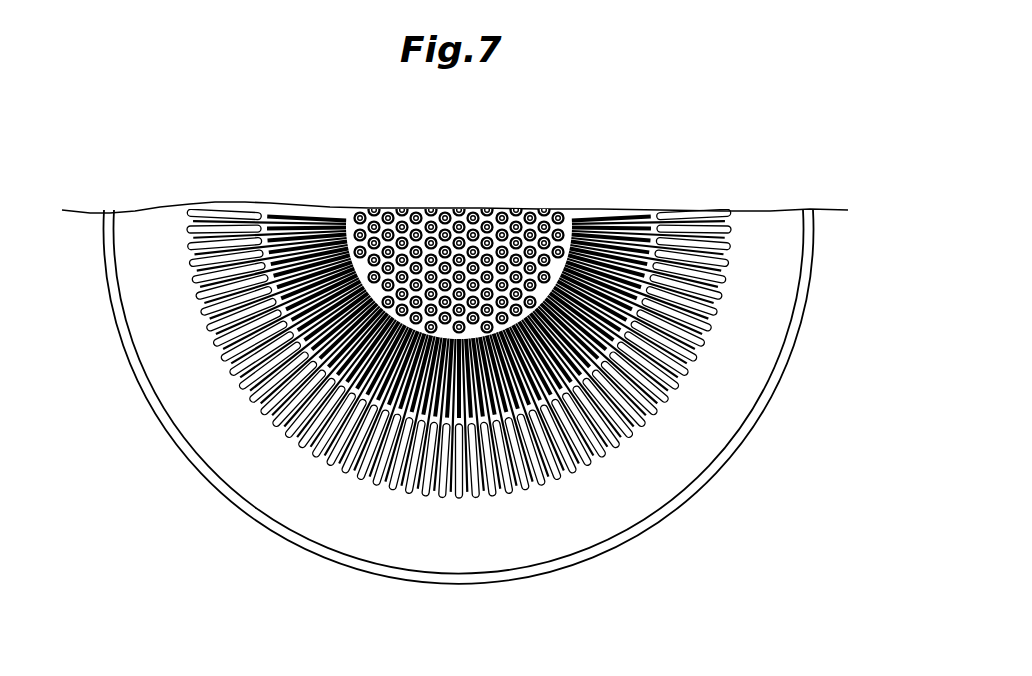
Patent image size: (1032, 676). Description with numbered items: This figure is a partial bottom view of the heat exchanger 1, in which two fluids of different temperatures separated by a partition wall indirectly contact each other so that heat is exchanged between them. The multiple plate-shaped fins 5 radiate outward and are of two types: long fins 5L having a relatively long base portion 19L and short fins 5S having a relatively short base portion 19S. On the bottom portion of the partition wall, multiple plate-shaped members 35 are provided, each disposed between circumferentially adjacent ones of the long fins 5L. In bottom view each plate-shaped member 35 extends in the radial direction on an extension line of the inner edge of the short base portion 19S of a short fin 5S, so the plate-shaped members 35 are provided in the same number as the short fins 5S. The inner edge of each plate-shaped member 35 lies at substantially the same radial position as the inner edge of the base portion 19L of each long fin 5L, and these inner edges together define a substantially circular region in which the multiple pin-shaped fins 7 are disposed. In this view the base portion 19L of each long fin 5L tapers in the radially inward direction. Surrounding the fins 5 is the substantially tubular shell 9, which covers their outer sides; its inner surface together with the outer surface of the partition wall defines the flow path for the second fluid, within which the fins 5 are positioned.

The heat exchanger 1 is at (233, 560).
The plate-shaped fins 5 is at (534, 387).
The long fins 5L is at (695, 278).
The short fins 5S is at (710, 297).
The pin-shaped fins 7 is at (465, 236).
The shell 9 is at (590, 523).
The base portion of long fin 19L is at (559, 226).
The short base portion of short fin 19S is at (649, 265).
The plate-shaped members 35 is at (640, 390).